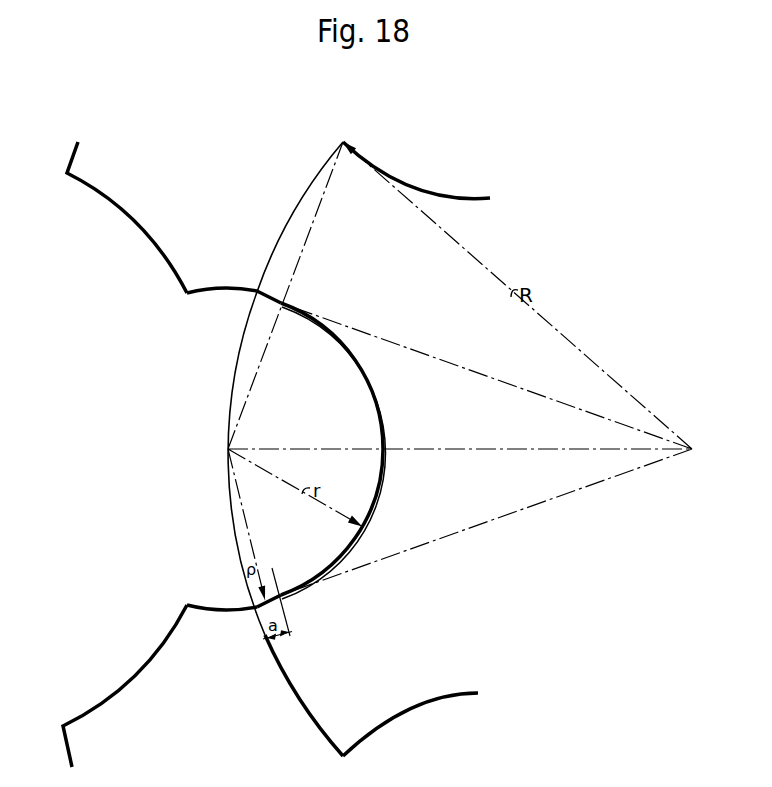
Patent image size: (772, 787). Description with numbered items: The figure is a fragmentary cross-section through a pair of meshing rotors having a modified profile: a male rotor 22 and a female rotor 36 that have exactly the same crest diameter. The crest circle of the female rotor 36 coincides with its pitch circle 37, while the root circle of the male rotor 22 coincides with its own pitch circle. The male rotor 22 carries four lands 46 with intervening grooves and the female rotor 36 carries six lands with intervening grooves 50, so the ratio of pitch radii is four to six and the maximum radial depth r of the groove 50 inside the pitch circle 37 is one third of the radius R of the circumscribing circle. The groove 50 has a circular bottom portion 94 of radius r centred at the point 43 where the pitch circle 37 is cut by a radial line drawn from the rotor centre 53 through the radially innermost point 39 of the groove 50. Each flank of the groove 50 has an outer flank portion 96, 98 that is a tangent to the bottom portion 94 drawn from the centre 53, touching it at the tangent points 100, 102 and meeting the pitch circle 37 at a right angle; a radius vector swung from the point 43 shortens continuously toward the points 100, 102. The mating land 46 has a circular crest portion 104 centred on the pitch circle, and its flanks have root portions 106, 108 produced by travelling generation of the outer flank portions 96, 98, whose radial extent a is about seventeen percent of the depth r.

The male rotor 22 is at (118, 235).
The female rotor 36 is at (314, 202).
The pitch circle 37 is at (236, 367).
The centre point 43 is at (228, 449).
The centre of the rotor 53 is at (692, 450).
The groove 50 is at (367, 371).
The land 46 is at (352, 423).
The radially innermost point 39 is at (387, 454).
The circular bottom portion 94 is at (381, 493).
The circular crest portion 104 is at (379, 478).
The outer flank portion 96 is at (268, 295).
The outer flank portion 98 is at (279, 602).
The tangent point 100 is at (287, 307).
The tangent point 102 is at (282, 595).
The root portion 106 is at (246, 268).
The root portion 108 is at (233, 608).